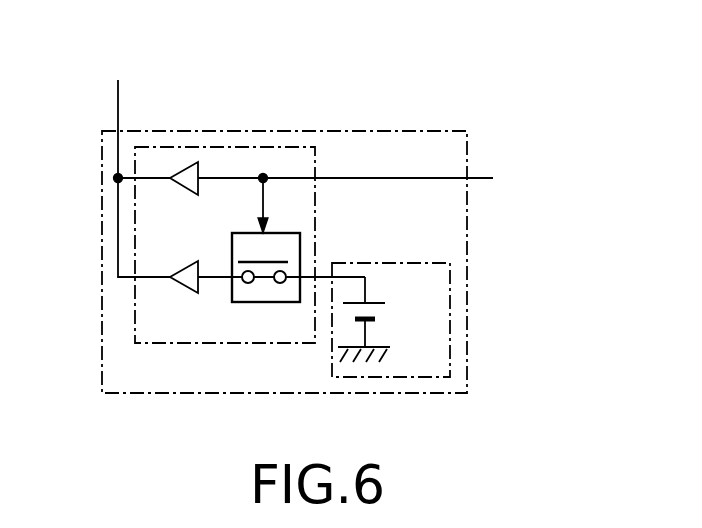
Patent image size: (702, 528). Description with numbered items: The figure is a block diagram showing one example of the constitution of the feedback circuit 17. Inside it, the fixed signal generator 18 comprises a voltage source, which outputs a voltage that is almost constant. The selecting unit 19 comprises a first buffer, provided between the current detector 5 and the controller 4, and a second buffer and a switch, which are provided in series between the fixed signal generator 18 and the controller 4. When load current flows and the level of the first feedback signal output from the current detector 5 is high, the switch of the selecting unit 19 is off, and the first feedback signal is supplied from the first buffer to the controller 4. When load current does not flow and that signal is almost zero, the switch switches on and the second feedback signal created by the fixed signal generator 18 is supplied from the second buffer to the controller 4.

The controller 4 is at (135, 164).
The current detector 5 is at (367, 185).
The feedback circuit 17 is at (468, 325).
The fixed signal generator 18 is at (382, 263).
The selecting unit 19 is at (233, 347).